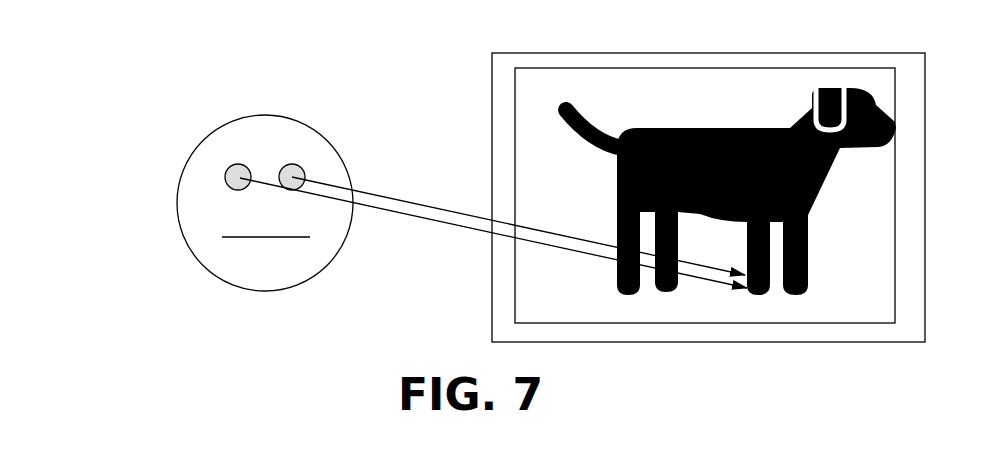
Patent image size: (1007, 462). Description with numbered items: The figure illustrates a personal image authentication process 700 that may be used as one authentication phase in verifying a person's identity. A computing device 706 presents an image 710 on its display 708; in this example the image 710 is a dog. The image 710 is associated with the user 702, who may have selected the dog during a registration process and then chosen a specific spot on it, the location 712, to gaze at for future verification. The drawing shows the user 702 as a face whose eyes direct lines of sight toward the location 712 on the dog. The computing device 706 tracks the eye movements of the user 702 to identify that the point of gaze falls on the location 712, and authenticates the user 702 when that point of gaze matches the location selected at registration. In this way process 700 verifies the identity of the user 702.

The personal image authentication process 700 is at (129, 136).
The user 702 is at (322, 132).
The computing device 706 is at (492, 78).
The display 708 is at (727, 88).
The image 710 is at (847, 90).
The location 712 is at (745, 290).